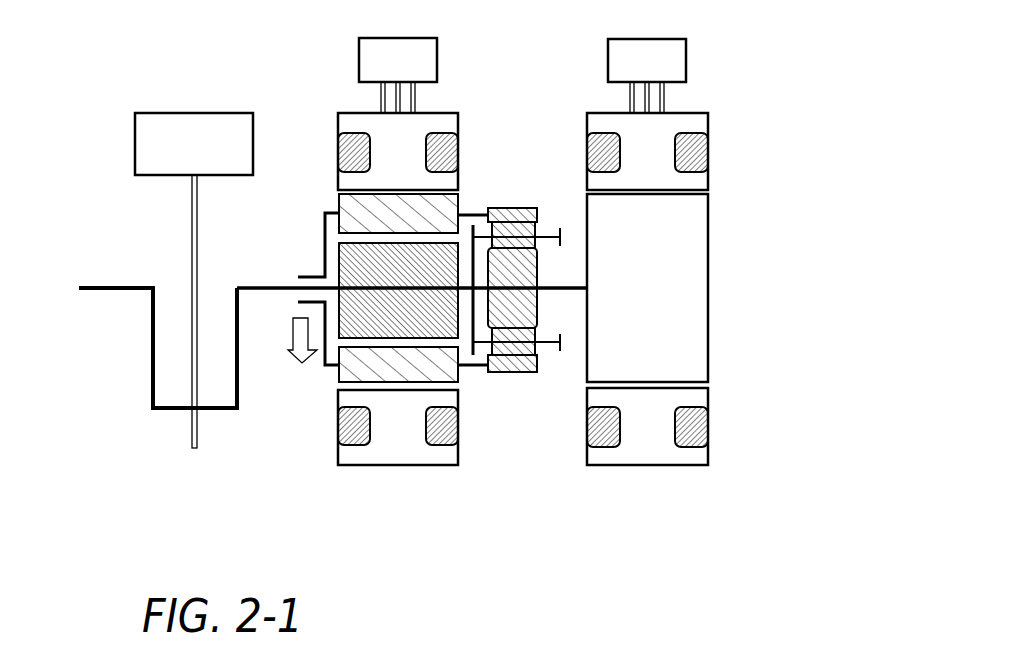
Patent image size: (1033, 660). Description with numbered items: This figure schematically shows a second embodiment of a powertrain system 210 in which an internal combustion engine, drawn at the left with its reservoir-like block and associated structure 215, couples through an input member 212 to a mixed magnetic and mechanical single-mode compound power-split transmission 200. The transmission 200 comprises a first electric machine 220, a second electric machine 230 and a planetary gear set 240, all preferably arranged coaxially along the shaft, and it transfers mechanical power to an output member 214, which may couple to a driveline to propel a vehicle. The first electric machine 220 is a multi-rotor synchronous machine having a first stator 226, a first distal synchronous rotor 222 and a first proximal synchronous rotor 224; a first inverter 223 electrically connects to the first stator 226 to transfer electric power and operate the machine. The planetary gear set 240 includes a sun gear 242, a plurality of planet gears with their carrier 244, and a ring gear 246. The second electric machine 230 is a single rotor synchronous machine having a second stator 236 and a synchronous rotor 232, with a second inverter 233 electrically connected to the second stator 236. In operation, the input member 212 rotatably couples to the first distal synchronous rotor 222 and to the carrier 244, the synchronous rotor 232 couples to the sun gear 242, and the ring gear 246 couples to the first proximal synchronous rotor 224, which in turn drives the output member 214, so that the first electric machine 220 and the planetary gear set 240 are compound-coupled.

The transmission 200 is at (737, 548).
The powertrain system 210 is at (134, 77).
The input member 212 is at (262, 286).
The output member 214 is at (307, 306).
The fluid reservoir and pump 215 is at (125, 453).
The first electric machine 220 is at (467, 473).
The first distal synchronous rotor 222 is at (340, 258).
The first inverter 223 is at (359, 60).
The first proximal synchronous rotor 224 is at (338, 372).
The first stator 226 is at (338, 457).
The second electric machine 230 is at (717, 473).
The synchronous rotor 232 is at (708, 345).
The second inverter 233 is at (686, 60).
The second stator 236 is at (708, 445).
The planetary gear set 240 is at (622, 382).
The sun gear 242 is at (540, 270).
The carrier 244 is at (540, 333).
The ring gear 246 is at (520, 399).